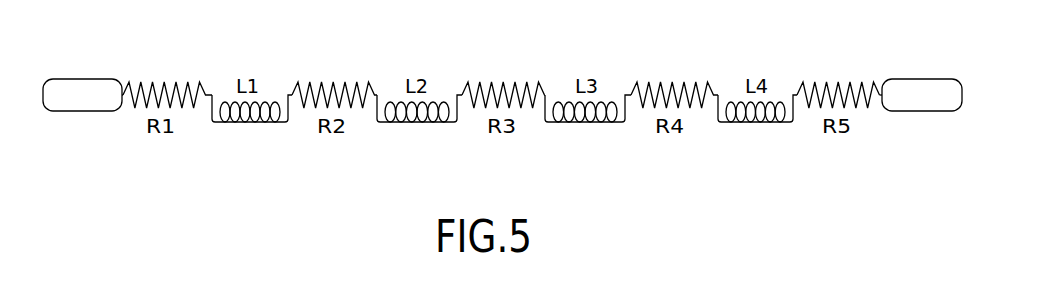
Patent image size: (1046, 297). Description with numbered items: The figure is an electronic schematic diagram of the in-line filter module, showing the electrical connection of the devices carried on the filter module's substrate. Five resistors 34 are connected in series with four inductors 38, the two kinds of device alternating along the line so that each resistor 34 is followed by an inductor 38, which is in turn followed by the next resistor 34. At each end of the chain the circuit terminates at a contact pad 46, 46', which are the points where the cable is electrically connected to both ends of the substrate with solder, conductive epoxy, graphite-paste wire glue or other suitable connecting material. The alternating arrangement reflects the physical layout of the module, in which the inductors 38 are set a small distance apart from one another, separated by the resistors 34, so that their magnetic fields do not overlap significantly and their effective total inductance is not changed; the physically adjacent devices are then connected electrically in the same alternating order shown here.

The resistor 34 is at (167, 85).
The inductor 38 is at (250, 127).
The contact pad 46 is at (83, 110).
The contact pad 46' is at (921, 77).